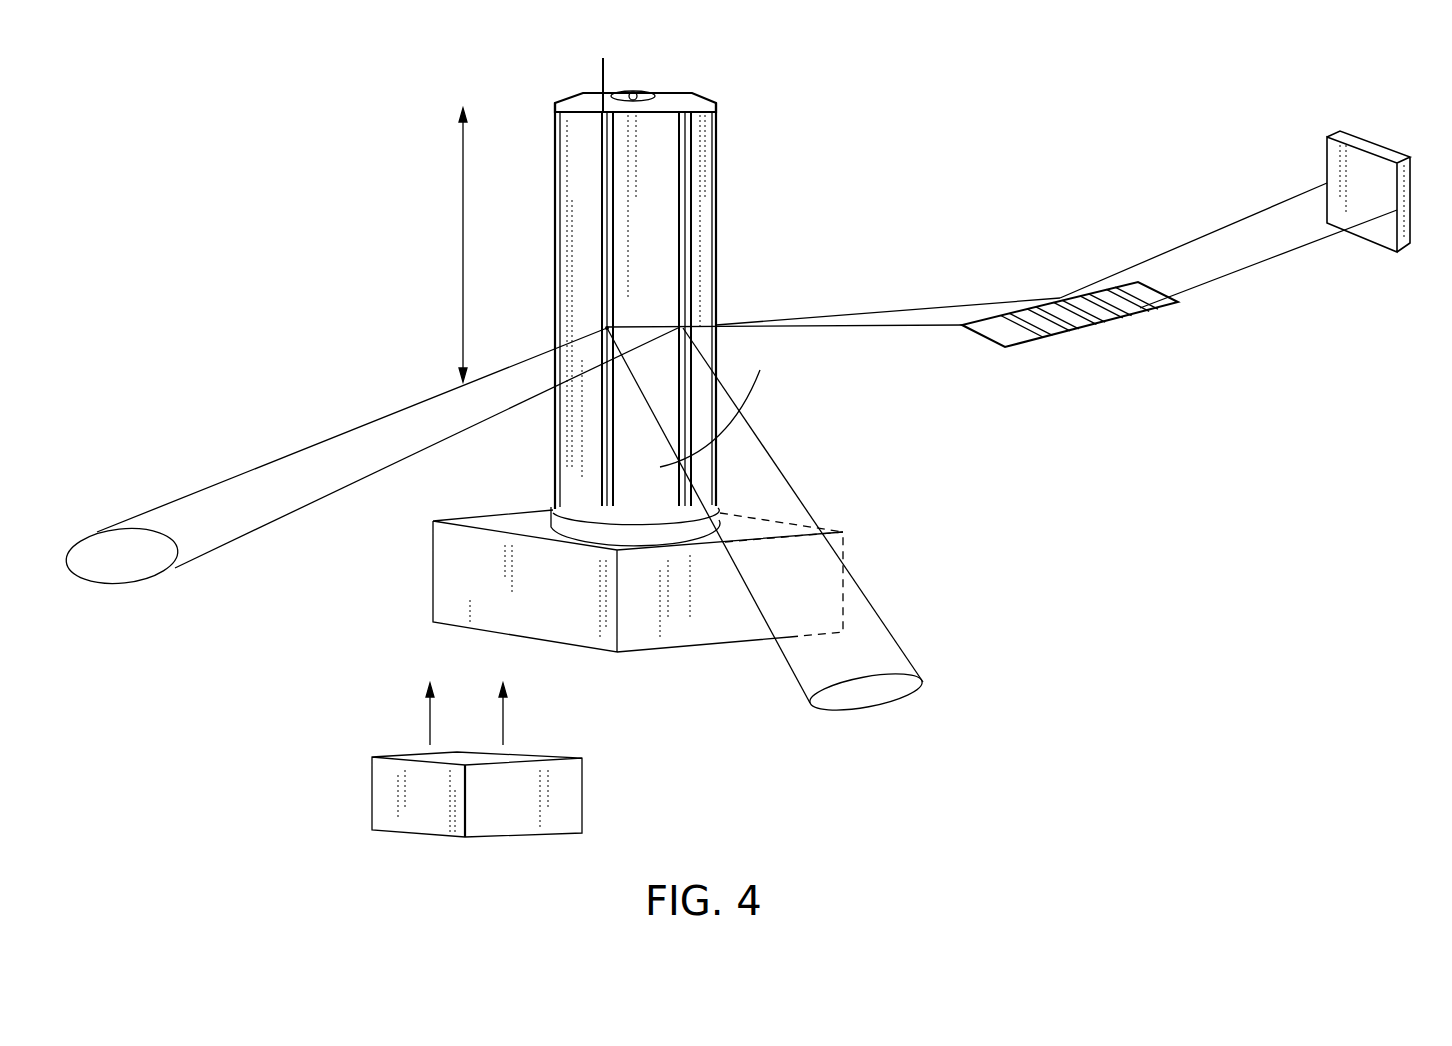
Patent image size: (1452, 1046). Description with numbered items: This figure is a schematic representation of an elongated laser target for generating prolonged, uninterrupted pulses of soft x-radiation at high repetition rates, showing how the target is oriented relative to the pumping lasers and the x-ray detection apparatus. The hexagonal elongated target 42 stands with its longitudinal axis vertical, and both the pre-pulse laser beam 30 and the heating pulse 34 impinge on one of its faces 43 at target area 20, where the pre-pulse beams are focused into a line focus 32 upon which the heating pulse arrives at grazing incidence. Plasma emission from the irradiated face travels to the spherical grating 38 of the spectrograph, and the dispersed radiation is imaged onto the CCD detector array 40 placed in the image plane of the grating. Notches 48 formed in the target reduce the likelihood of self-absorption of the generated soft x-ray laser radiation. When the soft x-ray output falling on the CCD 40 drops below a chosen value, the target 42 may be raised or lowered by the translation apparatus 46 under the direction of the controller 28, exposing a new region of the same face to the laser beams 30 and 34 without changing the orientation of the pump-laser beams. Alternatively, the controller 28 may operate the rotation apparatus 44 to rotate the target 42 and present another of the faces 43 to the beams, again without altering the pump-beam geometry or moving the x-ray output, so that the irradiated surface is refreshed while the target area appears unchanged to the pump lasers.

The target area 20 is at (627, 327).
The controller 28 is at (515, 815).
The pre-pulse laser beam 30 is at (855, 712).
The line focus 32 is at (660, 325).
The heating pulse 34 is at (128, 583).
The spherical grating 38 is at (1142, 319).
The CCD detector array 40 is at (1360, 133).
The hexagonal elongated target 42 is at (725, 185).
The faces 43 is at (700, 423).
The rotation apparatus 44 is at (730, 502).
The translation apparatus 46 is at (556, 620).
The notches 48 is at (674, 95).